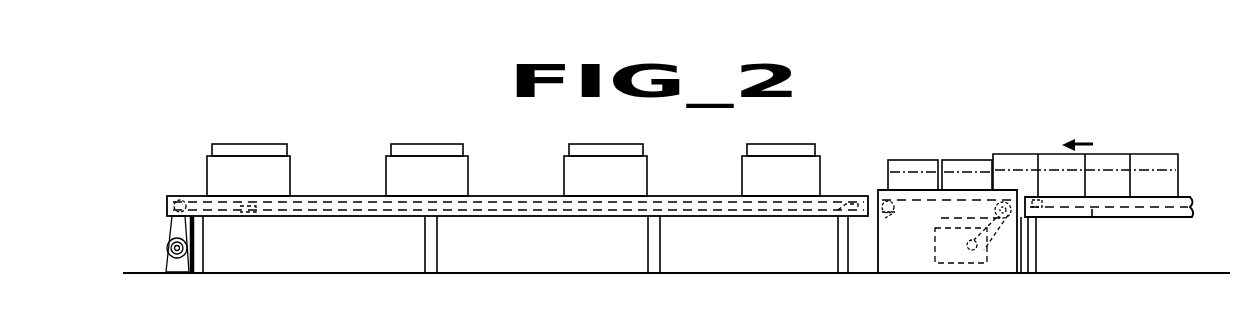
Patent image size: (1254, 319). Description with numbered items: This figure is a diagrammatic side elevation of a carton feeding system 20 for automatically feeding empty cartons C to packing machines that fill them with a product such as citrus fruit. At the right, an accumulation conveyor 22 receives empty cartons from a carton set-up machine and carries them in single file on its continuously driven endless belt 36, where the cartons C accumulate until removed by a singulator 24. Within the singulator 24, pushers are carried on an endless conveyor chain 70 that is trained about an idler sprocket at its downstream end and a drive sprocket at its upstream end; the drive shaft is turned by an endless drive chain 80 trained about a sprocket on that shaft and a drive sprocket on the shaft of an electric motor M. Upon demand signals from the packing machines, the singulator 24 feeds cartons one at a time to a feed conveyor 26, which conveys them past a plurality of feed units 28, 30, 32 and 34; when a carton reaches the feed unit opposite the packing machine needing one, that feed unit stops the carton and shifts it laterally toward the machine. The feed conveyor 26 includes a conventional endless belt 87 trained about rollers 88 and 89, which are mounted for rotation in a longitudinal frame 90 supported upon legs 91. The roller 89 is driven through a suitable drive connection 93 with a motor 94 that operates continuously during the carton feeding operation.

The carton feeding system 20 is at (517, 140).
The accumulation conveyor 22 is at (1187, 197).
The singulator 24 is at (875, 184).
The feed conveyor 26 is at (674, 195).
The feed unit 28 is at (794, 181).
The feed unit 30 is at (619, 181).
The feed unit 32 is at (440, 181).
The feed unit 34 is at (262, 181).
The endless belt 36 is at (1094, 222).
The endless conveyor chain 70 is at (941, 218).
The endless drive chain 80 is at (1020, 238).
The endless belt 87 is at (248, 213).
The roller 88 is at (832, 212).
The roller 89 is at (159, 198).
The longitudinal frame 90 is at (335, 200).
The legs 91 is at (204, 255).
The drive connection 93 is at (170, 219).
The motor 94 is at (169, 243).
The cartons C is at (997, 153).
The electric motor M is at (933, 247).